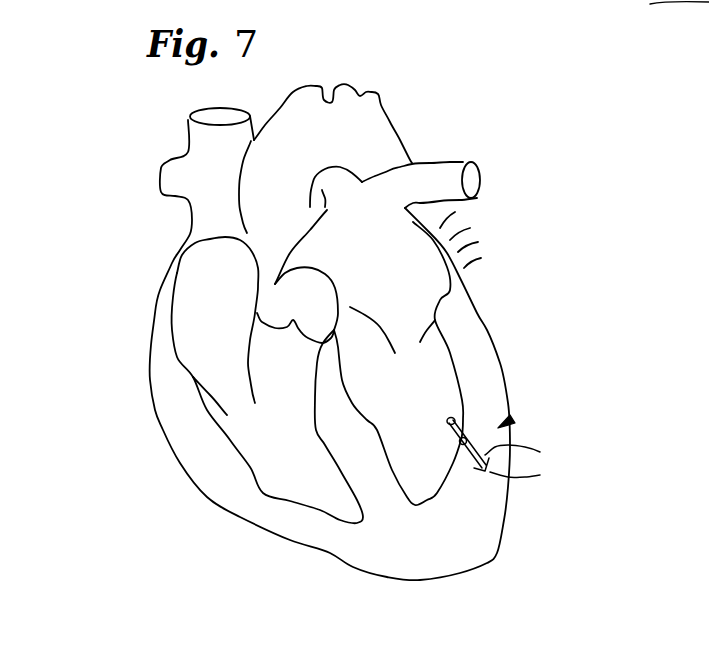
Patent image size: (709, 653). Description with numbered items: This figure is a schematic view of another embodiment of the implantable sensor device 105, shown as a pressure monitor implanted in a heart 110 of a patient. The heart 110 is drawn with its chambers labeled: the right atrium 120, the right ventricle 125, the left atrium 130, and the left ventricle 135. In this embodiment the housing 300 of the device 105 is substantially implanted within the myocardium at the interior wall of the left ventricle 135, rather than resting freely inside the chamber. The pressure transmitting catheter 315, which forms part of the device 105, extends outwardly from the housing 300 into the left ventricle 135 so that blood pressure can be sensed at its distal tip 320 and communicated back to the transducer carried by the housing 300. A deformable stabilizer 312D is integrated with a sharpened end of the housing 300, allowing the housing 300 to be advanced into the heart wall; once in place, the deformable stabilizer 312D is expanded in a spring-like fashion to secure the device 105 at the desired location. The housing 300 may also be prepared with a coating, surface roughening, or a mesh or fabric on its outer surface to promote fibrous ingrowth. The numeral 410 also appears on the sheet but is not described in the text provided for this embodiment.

The device 105 is at (507, 425).
The heart 110 is at (160, 430).
The right atrium 120 is at (228, 321).
The right ventricle 125 is at (299, 450).
The left atrium 130 is at (389, 259).
The left ventricle 135 is at (423, 404).
The housing 300 is at (540, 452).
The deformable stabilizer 312D is at (540, 475).
The pressure transmitting catheter 315 is at (463, 423).
The distal tip 320 is at (456, 420).
The instrument 410 is at (690, 0).